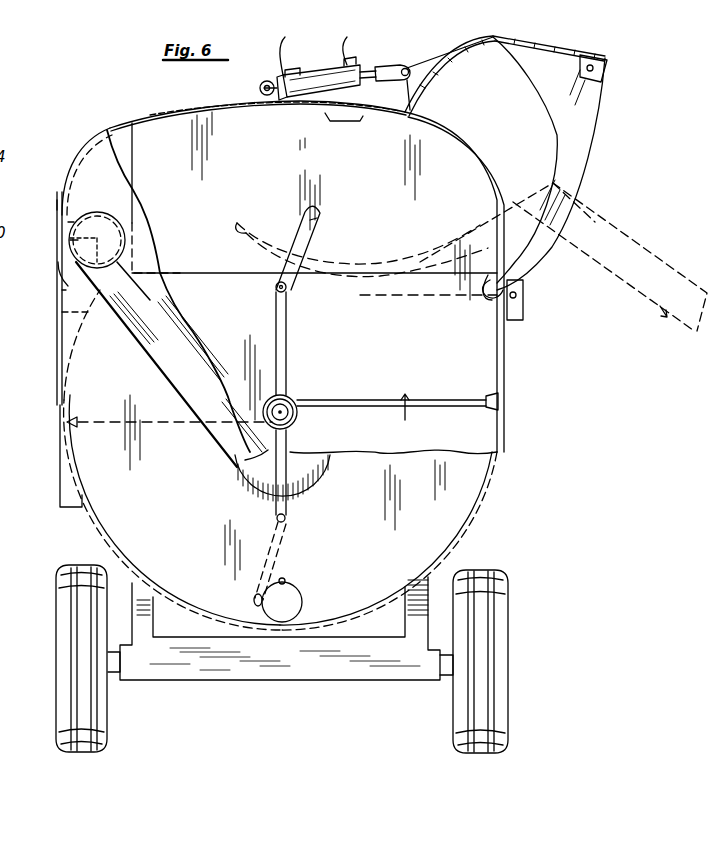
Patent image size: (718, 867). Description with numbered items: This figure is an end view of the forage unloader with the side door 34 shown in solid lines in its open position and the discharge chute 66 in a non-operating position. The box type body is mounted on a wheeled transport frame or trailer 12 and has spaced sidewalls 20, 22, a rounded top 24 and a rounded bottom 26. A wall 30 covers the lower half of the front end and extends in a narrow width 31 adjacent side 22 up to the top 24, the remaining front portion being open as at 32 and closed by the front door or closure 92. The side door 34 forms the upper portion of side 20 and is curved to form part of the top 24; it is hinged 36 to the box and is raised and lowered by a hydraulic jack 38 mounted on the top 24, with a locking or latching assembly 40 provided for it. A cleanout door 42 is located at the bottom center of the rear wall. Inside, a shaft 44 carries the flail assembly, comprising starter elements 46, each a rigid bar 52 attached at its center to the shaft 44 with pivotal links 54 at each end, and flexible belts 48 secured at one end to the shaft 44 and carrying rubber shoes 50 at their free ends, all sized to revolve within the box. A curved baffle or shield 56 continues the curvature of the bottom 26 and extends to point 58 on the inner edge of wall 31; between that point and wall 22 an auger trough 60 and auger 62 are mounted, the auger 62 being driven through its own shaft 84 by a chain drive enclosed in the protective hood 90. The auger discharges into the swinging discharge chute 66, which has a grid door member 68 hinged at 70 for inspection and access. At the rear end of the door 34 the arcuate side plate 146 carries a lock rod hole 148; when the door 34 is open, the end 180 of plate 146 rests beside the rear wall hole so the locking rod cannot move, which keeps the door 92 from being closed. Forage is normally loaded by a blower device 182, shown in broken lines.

The wheeled transport frame or trailer 12 is at (220, 690).
The sidewall 20 is at (504, 348).
The sidewall 22 is at (57, 210).
The rounded top 24 is at (222, 106).
The rounded bottom 26 is at (470, 530).
The wall 30 is at (102, 520).
The narrow width 31 is at (113, 143).
The open portion 32 is at (137, 145).
The side door 34 is at (545, 40).
The hinge 36 is at (400, 114).
The hydraulic jack 38 is at (371, 54).
The locking or latching assembly 40 is at (537, 298).
The cleanout door 42 is at (302, 600).
The shaft 44 is at (298, 418).
The starter elements 46 is at (325, 256).
The flexible belts 48 is at (420, 410).
The shoe 50 is at (500, 400).
The rigid bar 52 is at (302, 492).
The pivotal links 54 is at (270, 556).
The curved baffle or shield 56 is at (62, 315).
The point 58 is at (130, 280).
The auger trough 60 is at (62, 292).
The auger 62 is at (78, 200).
The discharge chute 66 is at (60, 500).
The door member 68 is at (58, 276).
The hinge 70 is at (68, 222).
The shaft 84 is at (70, 240).
The protective hood or cover 90 is at (236, 462).
The door or closure 92 is at (320, 156).
The arcuate side plate 146 is at (587, 155).
The lock rod hole 148 is at (600, 70).
The end of plate 180 is at (240, 222).
The blower device 182 is at (666, 320).